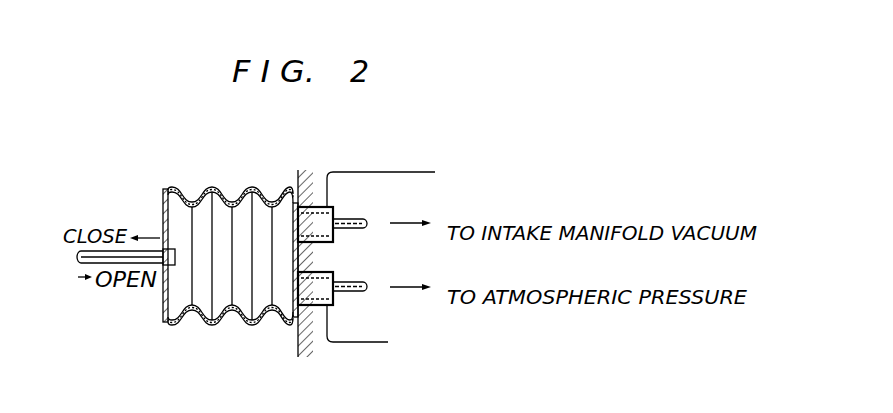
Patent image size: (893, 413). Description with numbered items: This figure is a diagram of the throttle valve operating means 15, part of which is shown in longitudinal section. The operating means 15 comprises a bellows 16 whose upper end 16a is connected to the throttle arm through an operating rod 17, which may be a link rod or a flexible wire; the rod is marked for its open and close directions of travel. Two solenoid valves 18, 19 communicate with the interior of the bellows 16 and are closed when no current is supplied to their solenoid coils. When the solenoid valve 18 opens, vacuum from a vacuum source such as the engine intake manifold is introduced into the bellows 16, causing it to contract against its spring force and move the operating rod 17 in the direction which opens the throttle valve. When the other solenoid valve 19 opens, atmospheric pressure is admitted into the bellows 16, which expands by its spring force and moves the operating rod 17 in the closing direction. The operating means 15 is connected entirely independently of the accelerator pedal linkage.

The throttle valve operating means 15 is at (201, 248).
The bellows 16 is at (213, 324).
The upper end of bellows 16a is at (157, 291).
The operating rod 17 is at (78, 277).
The solenoid valve 18 is at (337, 207).
The solenoid valve 19 is at (337, 277).